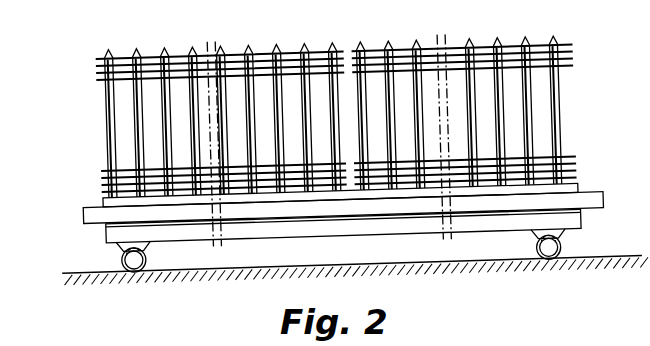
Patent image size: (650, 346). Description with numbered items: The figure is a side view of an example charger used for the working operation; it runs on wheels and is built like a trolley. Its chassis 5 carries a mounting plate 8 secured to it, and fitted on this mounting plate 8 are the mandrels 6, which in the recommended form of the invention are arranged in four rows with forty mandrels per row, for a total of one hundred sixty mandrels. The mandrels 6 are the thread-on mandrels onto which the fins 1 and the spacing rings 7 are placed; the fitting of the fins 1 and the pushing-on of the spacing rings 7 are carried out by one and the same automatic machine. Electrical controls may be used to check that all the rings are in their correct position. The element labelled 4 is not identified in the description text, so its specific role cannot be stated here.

The fins 1 is at (102, 190).
The upper plank of carriage 4 is at (578, 185).
The chassis 5 is at (573, 215).
The mandrels 6 is at (138, 137).
The spacing rings 7 is at (573, 172).
The mounting plate 8 is at (93, 217).